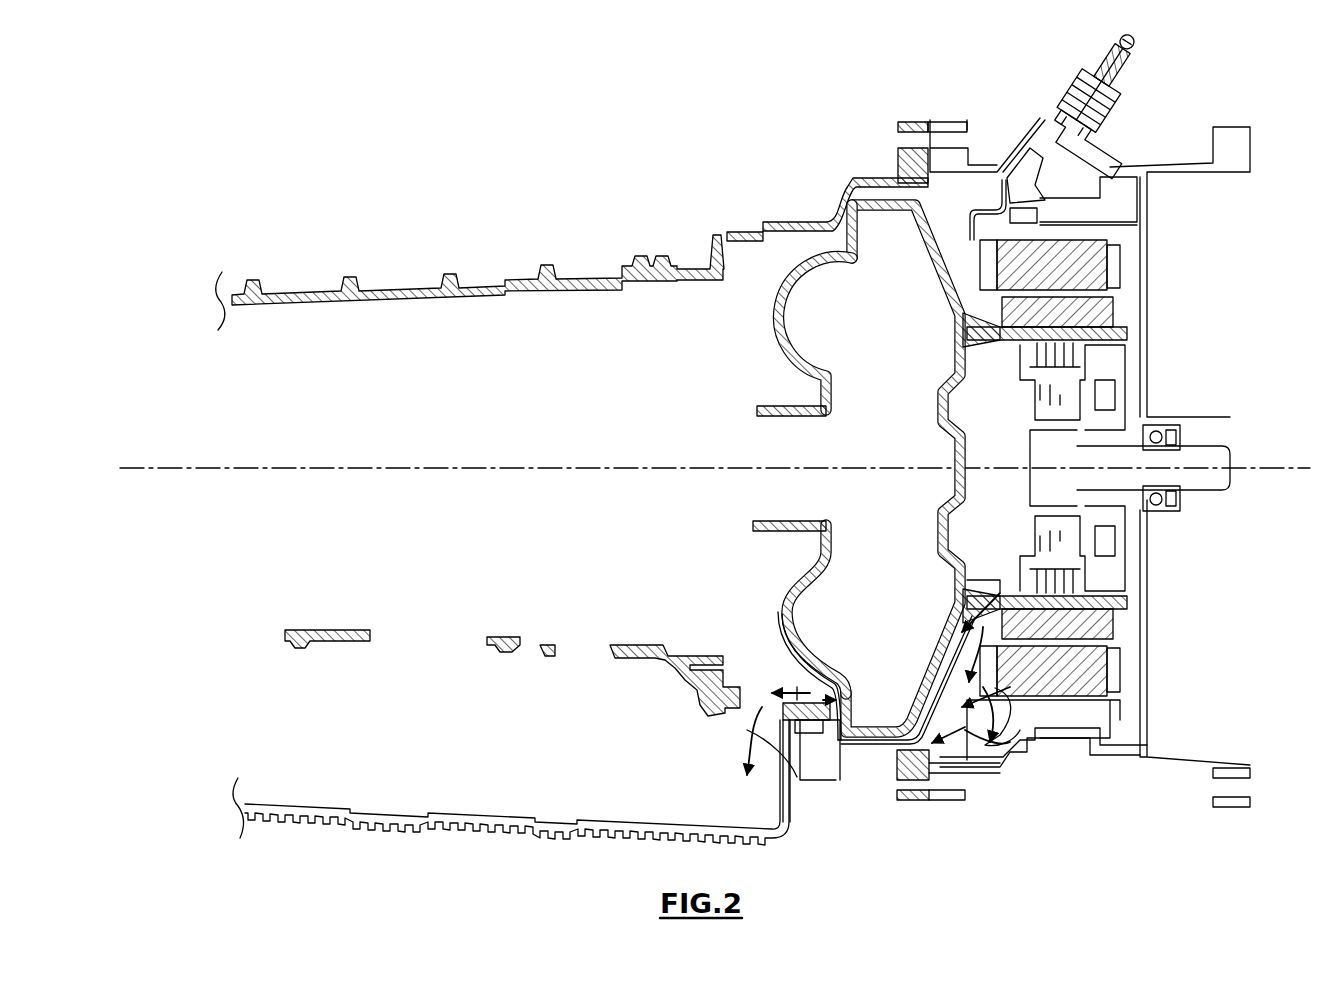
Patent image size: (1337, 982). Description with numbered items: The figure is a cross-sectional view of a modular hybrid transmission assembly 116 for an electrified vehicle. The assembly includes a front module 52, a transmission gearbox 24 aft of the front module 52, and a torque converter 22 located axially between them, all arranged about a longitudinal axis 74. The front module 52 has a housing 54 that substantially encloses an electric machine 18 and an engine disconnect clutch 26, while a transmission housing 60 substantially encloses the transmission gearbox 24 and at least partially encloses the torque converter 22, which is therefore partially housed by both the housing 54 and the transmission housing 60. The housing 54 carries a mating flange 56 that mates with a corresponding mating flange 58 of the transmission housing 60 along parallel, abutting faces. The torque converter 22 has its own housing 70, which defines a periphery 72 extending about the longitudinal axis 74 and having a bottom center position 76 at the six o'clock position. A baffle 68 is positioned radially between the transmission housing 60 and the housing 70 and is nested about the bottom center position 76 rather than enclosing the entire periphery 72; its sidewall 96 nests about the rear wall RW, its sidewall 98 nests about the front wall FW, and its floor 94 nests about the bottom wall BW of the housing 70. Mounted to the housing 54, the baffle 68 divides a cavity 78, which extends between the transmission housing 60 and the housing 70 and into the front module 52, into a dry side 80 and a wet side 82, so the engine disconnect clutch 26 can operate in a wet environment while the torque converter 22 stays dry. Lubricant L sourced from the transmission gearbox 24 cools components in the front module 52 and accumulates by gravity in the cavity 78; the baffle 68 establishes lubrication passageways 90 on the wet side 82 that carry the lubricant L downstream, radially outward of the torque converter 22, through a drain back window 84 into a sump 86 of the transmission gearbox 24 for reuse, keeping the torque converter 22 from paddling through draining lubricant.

The modular hybrid transmission assembly 116 is at (522, 188).
The transmission housing 60 is at (562, 280).
The periphery 72 is at (868, 190).
The mating flange 58 is at (897, 166).
The mating flange 56 is at (942, 160).
The front module 52 is at (1150, 138).
The electric machine 18 is at (1062, 258).
The engine disconnect clutch 26 is at (1078, 358).
The torque converter 22 is at (900, 428).
The housing 70 is at (786, 328).
The transmission gearbox 24 is at (338, 512).
The longitudinal axis 74 is at (503, 470).
The dry side 80 is at (962, 632).
The baffle 68 is at (762, 620).
The sidewall 96 is at (775, 648).
The bottom center position 76 is at (888, 700).
The sidewall 98 is at (948, 676).
The floor 94 is at (905, 740).
The drain back window 84 is at (745, 698).
The wet side 82 is at (1005, 692).
The housing 54 is at (1022, 768).
The cavity 78 is at (950, 752).
The lubrication passageways 90 is at (864, 757).
The sump 86 is at (558, 798).
The front wall FW is at (950, 600).
The rear wall RW is at (800, 640).
The bottom wall BW is at (882, 702).